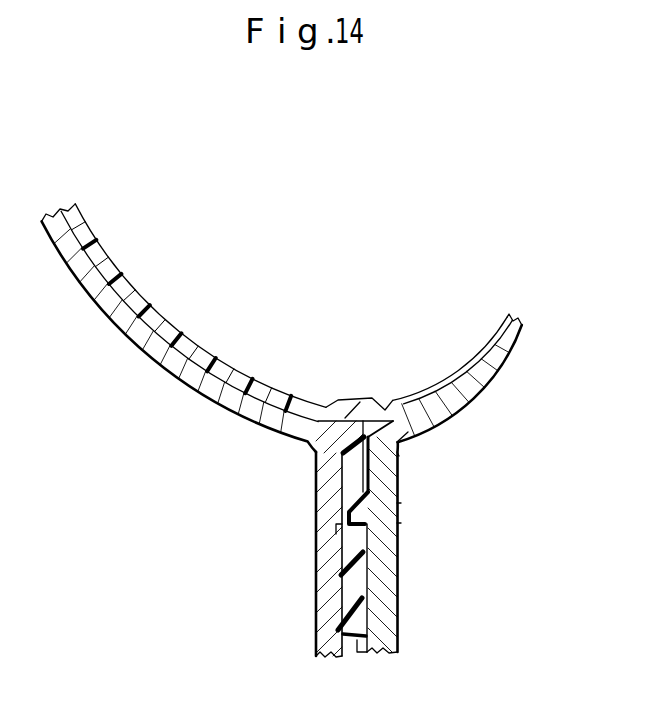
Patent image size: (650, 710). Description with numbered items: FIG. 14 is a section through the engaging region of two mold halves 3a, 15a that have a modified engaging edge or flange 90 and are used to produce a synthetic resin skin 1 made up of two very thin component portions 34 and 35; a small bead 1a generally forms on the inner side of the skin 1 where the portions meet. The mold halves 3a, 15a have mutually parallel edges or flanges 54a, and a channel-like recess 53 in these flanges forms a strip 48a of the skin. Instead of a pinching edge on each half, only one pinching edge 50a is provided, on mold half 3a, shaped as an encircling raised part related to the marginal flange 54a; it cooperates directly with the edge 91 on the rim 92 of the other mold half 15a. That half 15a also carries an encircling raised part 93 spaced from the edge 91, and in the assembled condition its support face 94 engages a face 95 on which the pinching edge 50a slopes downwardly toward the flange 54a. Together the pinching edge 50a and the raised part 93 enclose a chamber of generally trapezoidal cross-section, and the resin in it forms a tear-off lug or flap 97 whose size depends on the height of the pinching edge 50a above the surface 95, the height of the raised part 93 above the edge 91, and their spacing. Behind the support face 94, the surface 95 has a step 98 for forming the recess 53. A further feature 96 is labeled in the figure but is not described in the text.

The synthetic resin skin 1 is at (487, 321).
The small bead 1a is at (358, 397).
The mold half 3a is at (77, 283).
The mold half 15a is at (500, 357).
The component portion 34 is at (147, 305).
The component portion 35 is at (468, 362).
The strip 48a is at (343, 603).
The pinching edge 50a is at (347, 398).
The channel-like recess 53 is at (357, 642).
The marginal flange 54a is at (390, 603).
The engaging edge or flange 90 is at (164, 465).
The edge 91 is at (400, 442).
The rim 92 is at (397, 452).
The raised part 93 is at (397, 503).
The support face 94 is at (397, 523).
The face 95 is at (345, 522).
The second catch 96 is at (340, 468).
The tear-off lug or flap 97 is at (340, 494).
The step 98 is at (340, 556).